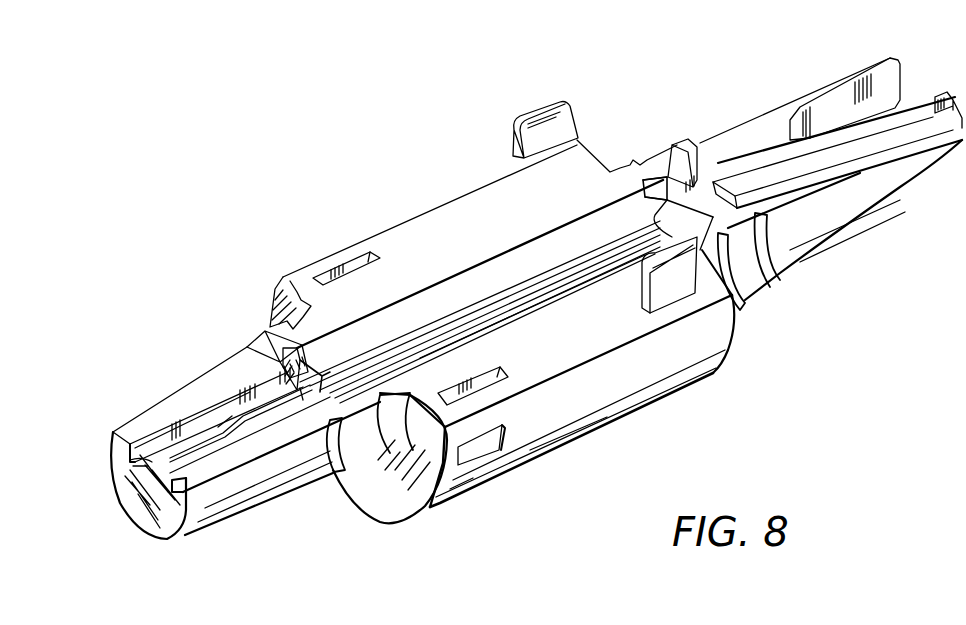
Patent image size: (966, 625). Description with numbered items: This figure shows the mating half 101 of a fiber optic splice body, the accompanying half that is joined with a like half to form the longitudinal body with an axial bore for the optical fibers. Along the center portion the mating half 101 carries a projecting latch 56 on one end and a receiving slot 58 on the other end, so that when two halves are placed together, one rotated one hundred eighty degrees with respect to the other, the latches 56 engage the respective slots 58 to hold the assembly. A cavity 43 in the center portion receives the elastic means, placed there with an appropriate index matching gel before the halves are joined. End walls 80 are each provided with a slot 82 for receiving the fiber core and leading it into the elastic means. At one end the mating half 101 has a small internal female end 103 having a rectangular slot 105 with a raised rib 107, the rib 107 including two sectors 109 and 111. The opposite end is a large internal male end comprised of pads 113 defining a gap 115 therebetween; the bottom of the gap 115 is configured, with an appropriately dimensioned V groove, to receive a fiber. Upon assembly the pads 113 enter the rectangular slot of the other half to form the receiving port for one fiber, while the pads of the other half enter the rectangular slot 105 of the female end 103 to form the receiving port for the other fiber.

The cavity 43 is at (513, 273).
The projecting latch 56 is at (578, 138).
The receiving slot 58 is at (355, 263).
The end wall 80 is at (340, 378).
The slot 82 is at (266, 341).
The mating half 101 is at (417, 193).
The small internal female end 103 is at (162, 364).
The rectangular slot 105 is at (122, 470).
The raised rib 107 is at (226, 417).
The sector 109 is at (181, 430).
The sector 111 is at (268, 395).
The pad 113 is at (765, 128).
The gap 115 is at (880, 92).